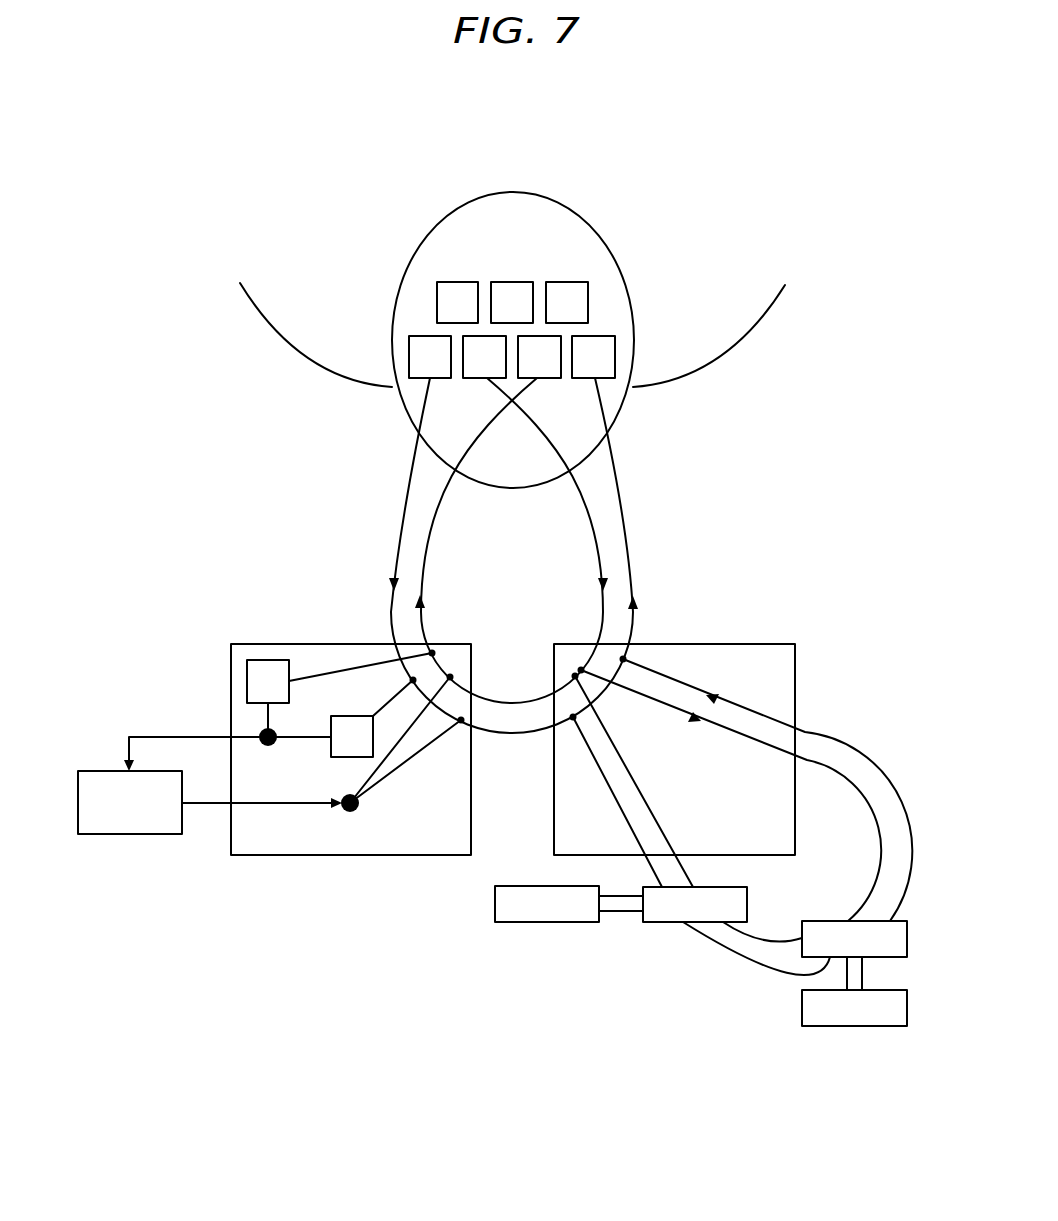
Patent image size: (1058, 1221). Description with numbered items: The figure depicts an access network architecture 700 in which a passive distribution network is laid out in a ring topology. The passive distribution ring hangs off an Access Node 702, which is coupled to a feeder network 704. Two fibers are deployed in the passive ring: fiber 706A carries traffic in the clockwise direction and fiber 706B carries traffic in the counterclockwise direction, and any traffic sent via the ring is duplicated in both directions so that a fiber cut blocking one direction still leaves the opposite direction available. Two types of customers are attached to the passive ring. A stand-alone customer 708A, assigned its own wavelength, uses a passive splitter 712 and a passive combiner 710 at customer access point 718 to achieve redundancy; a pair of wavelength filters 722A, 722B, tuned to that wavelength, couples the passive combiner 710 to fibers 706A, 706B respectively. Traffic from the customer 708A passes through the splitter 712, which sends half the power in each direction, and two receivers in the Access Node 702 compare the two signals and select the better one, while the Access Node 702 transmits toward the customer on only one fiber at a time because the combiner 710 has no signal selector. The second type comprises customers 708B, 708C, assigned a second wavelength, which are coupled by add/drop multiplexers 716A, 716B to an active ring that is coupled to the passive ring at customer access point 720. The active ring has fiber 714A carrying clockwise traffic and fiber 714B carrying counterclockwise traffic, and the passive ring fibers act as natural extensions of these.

The access network architecture 700 is at (661, 156).
The Access Node 702 is at (513, 192).
The feeder network 704 is at (308, 358).
The fiber 706A is at (588, 515).
The fiber 706B is at (627, 498).
The stand-alone customer 708A is at (100, 771).
The customer 708B is at (545, 922).
The customer 708C is at (850, 1027).
The passive combiner 710 is at (258, 732).
The passive splitter 712 is at (360, 804).
The fiber 714A is at (660, 705).
The fiber 714B is at (727, 700).
The add/drop multiplexer 716A is at (823, 921).
The add/drop multiplexer 716B is at (660, 922).
The customer access point 718 is at (350, 856).
The customer access point 720 is at (795, 820).
The wavelength filter 722A is at (247, 681).
The wavelength filter 722B is at (331, 752).